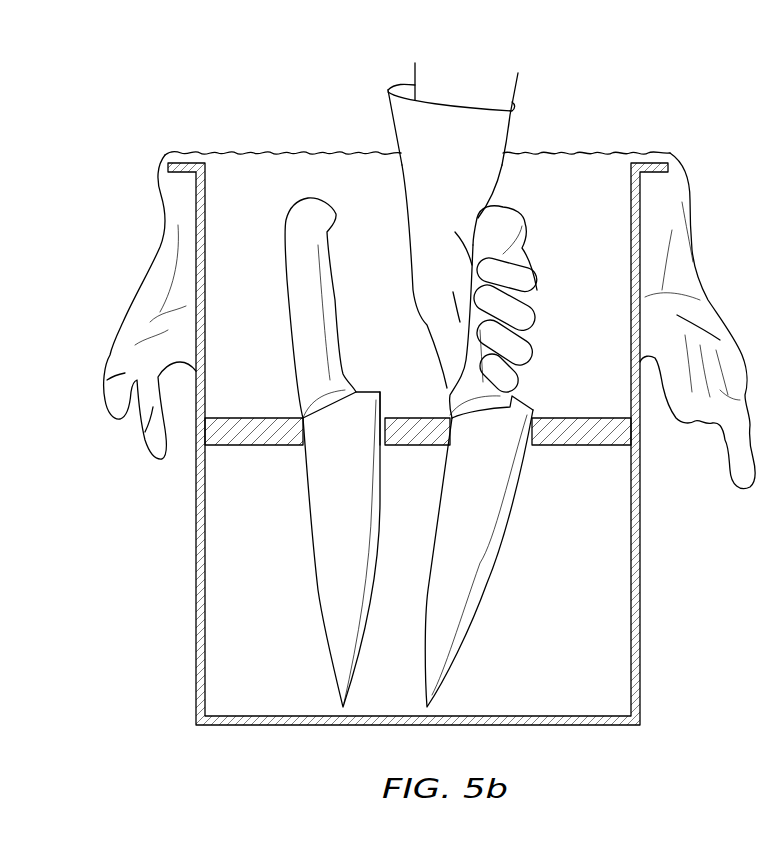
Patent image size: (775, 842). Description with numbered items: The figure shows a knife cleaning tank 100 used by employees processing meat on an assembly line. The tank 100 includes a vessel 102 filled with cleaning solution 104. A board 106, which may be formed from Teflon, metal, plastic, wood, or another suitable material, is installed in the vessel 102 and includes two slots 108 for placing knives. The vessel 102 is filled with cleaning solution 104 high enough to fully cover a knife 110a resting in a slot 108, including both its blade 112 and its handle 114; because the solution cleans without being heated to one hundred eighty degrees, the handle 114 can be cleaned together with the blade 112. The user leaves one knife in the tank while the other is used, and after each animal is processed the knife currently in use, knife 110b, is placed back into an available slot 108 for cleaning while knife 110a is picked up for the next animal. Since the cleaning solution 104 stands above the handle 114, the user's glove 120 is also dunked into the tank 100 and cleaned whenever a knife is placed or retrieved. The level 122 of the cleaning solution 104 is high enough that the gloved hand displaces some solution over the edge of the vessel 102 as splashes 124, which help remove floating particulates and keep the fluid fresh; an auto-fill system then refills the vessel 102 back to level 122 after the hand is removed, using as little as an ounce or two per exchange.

The knife cleaning tank 100 is at (405, 371).
The vessel 102 is at (196, 218).
The cleaning solution 104 is at (393, 222).
The board 106 is at (253, 444).
The slot 108 is at (383, 432).
The knife 110a is at (307, 198).
The knife 110b is at (528, 217).
The blade 112 is at (329, 547).
The handle 114 is at (310, 262).
The glove 120 is at (387, 104).
The level 122 is at (598, 152).
The splash 124 is at (713, 317).